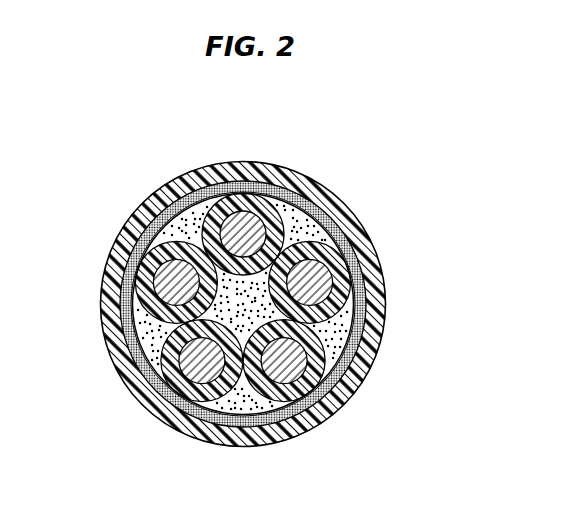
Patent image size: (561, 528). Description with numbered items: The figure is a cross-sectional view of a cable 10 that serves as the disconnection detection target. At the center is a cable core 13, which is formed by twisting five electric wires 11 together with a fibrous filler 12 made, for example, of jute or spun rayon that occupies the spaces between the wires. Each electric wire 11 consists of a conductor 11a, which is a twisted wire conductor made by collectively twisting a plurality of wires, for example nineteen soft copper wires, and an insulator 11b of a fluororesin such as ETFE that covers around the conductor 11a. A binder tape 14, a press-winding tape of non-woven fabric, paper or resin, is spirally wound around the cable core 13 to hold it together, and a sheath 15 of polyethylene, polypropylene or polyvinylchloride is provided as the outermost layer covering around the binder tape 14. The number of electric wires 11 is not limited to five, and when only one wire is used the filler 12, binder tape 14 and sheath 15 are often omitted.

The cable 10 is at (112, 162).
The electric wire 11 is at (441, 208).
The conductor 11a is at (337, 255).
The insulator 11b is at (322, 276).
The filler 12 is at (328, 350).
The cable core 13 is at (340, 357).
The binder tape 14 is at (347, 370).
The sheath 15 is at (340, 403).